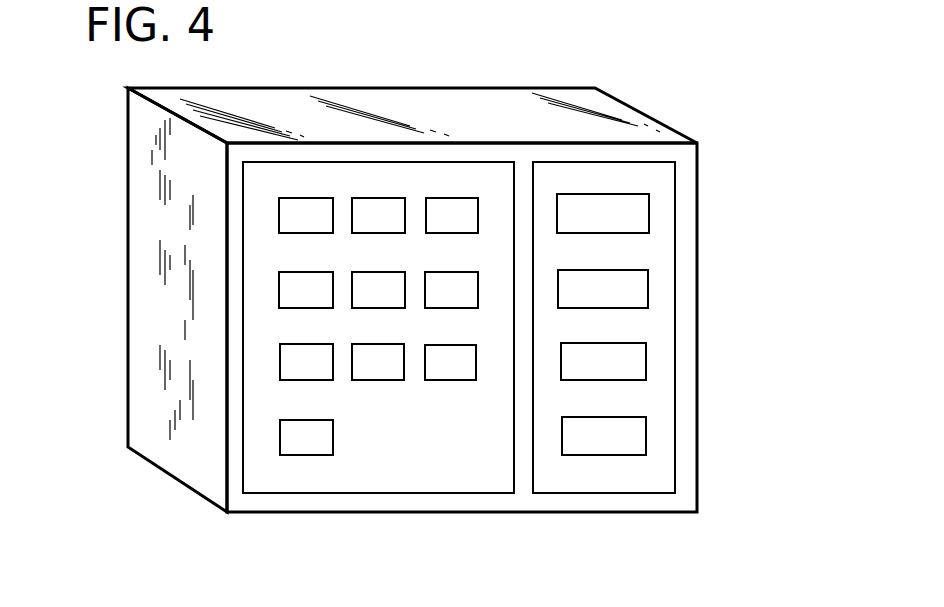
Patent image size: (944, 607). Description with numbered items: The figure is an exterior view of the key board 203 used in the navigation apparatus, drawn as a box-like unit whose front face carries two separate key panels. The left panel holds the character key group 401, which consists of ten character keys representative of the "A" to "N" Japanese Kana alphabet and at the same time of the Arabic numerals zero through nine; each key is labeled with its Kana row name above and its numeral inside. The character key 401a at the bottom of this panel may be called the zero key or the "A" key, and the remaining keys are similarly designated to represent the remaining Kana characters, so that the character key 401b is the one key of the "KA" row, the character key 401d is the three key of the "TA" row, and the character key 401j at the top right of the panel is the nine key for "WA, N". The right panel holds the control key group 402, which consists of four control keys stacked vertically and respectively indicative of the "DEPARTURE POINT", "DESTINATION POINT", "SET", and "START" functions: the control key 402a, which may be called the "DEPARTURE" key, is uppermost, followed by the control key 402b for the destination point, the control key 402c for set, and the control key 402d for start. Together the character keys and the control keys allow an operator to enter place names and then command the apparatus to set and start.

The key board 203 is at (668, 119).
The character key group 401 is at (405, 470).
The character key 401a is at (305, 456).
The character key 401b is at (278, 364).
The character key 401d is at (463, 380).
The character key 401j is at (465, 215).
The control key group 402 is at (608, 478).
The control key 402a is at (649, 203).
The control key 402b is at (648, 280).
The control key 402c is at (646, 355).
The control key 402d is at (646, 433).